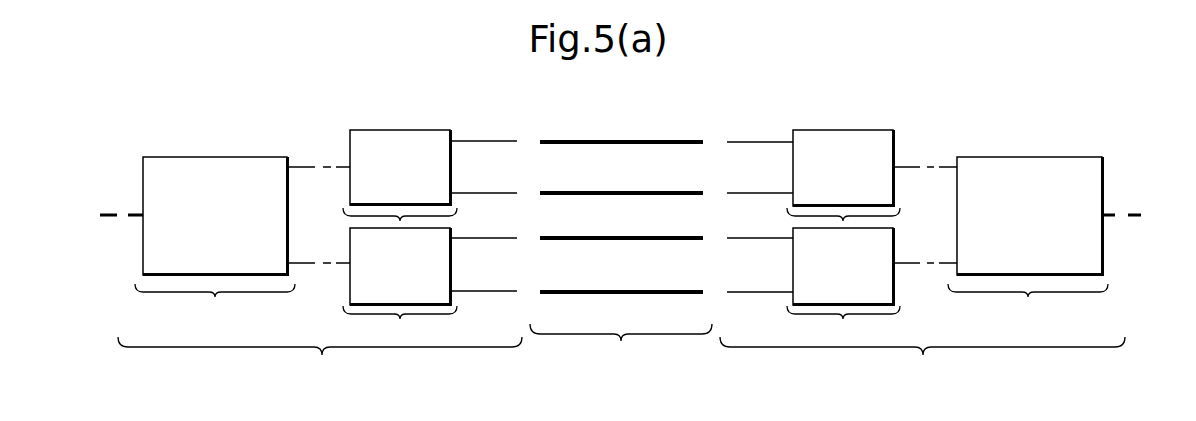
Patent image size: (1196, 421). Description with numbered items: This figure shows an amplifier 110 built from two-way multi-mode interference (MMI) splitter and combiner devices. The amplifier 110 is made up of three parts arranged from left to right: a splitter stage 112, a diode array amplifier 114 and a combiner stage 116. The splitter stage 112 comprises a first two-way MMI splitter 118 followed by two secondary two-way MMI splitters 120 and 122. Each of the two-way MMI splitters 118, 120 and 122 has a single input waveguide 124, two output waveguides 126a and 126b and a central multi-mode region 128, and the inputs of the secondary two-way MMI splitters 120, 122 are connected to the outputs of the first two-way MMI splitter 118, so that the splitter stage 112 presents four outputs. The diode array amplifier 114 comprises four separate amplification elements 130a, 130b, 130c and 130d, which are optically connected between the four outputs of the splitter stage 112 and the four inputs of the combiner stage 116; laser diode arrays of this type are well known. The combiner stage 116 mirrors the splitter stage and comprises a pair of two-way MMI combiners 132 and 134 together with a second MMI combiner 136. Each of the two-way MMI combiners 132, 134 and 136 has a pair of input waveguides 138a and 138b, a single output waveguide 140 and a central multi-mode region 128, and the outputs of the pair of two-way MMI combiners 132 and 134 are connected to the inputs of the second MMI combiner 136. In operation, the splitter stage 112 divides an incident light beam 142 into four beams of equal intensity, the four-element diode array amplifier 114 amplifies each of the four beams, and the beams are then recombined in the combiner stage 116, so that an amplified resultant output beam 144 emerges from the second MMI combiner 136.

The amplifier 110 is at (856, 94).
The splitter stage 112 is at (320, 361).
The diode array amplifier 114 is at (621, 344).
The combiner stage 116 is at (922, 359).
The first two-way MMI splitter 118 is at (215, 241).
The secondary two-way MMI splitter 120 is at (400, 220).
The secondary two-way MMI splitter 122 is at (430, 286).
The input waveguide 124 is at (330, 165).
The output waveguide 126a is at (465, 140).
The output waveguide 126b is at (467, 192).
The central multi-mode region 128 is at (375, 138).
The amplification element 130a is at (573, 140).
The amplification element 130b is at (588, 191).
The amplification element 130c is at (572, 237).
The amplification element 130d is at (588, 290).
The two-way MMI combiner 132 is at (845, 221).
The two-way MMI combiner 134 is at (813, 285).
The second MMI combiner 136 is at (1028, 240).
The input waveguide 138a is at (762, 140).
The input waveguide 138b is at (763, 192).
The output waveguide 140 is at (912, 165).
The incident light beam 142 is at (108, 213).
The amplified resultant output beam 144 is at (1137, 210).